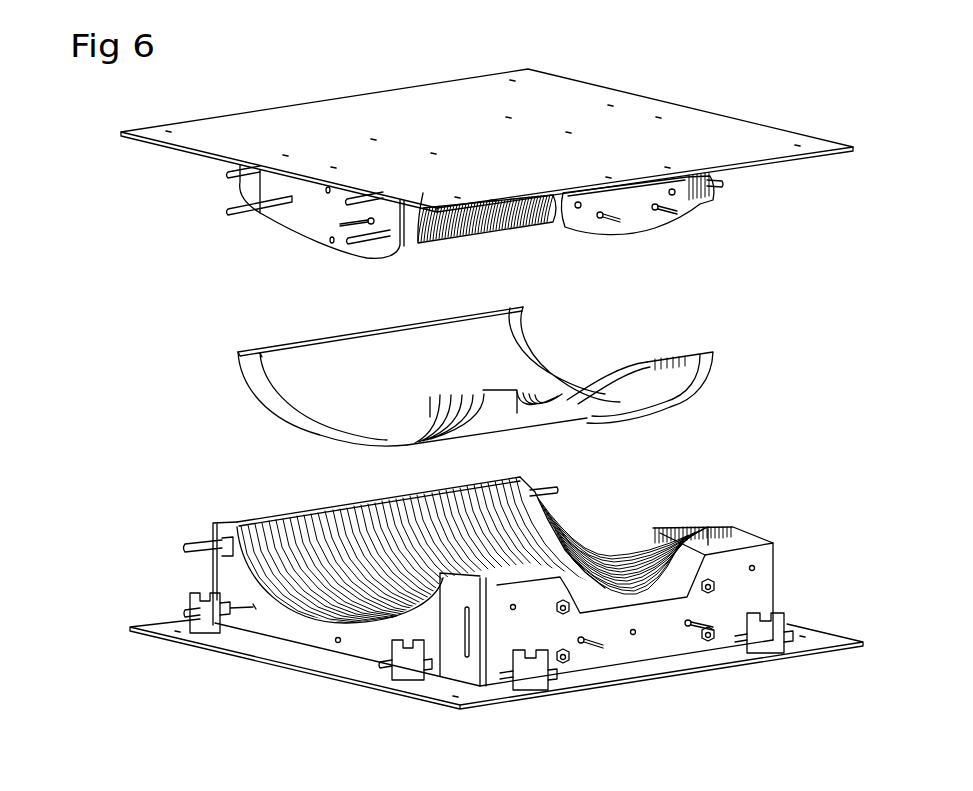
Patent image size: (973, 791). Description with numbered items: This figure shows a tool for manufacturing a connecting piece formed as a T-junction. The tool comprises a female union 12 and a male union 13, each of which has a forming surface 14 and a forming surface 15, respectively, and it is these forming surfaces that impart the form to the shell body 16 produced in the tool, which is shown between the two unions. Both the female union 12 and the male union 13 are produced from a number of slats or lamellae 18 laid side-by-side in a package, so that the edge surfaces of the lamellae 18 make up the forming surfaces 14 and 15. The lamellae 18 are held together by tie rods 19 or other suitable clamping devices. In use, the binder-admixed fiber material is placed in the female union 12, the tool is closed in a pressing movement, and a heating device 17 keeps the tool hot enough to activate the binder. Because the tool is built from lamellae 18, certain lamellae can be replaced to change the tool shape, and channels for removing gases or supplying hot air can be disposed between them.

The female union 12 is at (760, 590).
The male union 13 is at (292, 228).
The forming surface 14 is at (317, 602).
The forming surface 15 is at (450, 244).
The shell body 16 is at (870, 368).
The heating device 17 is at (333, 221).
The lamellae 18 is at (702, 197).
The tie rods 19 is at (363, 242).